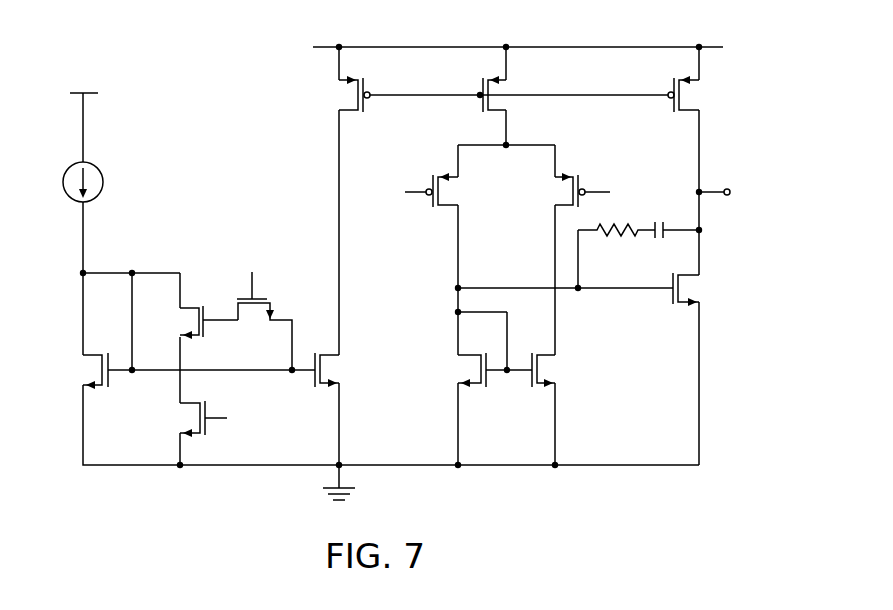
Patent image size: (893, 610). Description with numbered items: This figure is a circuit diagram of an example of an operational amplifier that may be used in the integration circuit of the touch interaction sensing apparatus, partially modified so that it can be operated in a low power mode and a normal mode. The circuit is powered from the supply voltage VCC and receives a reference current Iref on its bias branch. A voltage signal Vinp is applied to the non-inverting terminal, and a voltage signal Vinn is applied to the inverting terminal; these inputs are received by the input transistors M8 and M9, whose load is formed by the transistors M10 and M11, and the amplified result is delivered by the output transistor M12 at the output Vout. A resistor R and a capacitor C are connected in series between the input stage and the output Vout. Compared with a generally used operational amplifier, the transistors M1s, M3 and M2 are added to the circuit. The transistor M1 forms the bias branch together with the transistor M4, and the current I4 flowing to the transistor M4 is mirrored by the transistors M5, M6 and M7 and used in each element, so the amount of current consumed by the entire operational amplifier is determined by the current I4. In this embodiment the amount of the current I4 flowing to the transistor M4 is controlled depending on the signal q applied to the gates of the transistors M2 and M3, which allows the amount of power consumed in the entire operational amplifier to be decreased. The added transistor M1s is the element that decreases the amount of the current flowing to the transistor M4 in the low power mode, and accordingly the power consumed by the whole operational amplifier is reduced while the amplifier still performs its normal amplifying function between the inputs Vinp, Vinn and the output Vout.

The transistor M1 is at (80, 371).
The transistor M1s is at (209, 311).
The transistor M2 is at (187, 419).
The transistor M3 is at (264, 321).
The transistor M4 is at (342, 370).
The transistor M5 is at (338, 94).
The transistor M6 is at (476, 90).
The transistor M7 is at (669, 90).
The transistor M8 is at (447, 190).
The transistor M9 is at (566, 190).
The transistor M10 is at (449, 370).
The transistor M11 is at (564, 370).
The transistor M12 is at (672, 303).
The resistor R is at (616, 244).
The capacitor C is at (676, 243).
The supply voltage VCC is at (312, 60).
The reference current Iref is at (69, 225).
The current I4 is at (353, 225).
The signal q is at (245, 338).
The voltage signal Vinp is at (379, 190).
The voltage signal Vinn is at (633, 190).
The output Vout is at (756, 190).